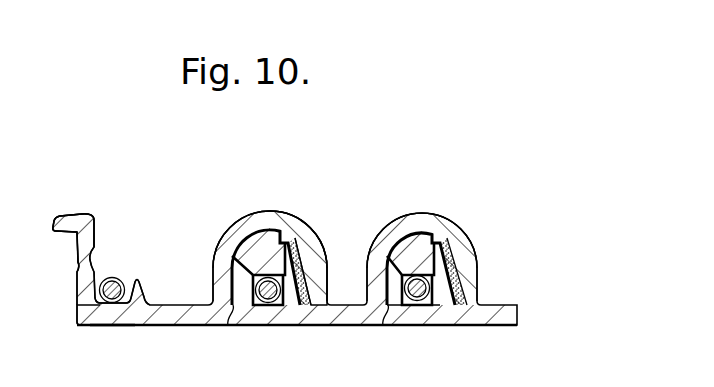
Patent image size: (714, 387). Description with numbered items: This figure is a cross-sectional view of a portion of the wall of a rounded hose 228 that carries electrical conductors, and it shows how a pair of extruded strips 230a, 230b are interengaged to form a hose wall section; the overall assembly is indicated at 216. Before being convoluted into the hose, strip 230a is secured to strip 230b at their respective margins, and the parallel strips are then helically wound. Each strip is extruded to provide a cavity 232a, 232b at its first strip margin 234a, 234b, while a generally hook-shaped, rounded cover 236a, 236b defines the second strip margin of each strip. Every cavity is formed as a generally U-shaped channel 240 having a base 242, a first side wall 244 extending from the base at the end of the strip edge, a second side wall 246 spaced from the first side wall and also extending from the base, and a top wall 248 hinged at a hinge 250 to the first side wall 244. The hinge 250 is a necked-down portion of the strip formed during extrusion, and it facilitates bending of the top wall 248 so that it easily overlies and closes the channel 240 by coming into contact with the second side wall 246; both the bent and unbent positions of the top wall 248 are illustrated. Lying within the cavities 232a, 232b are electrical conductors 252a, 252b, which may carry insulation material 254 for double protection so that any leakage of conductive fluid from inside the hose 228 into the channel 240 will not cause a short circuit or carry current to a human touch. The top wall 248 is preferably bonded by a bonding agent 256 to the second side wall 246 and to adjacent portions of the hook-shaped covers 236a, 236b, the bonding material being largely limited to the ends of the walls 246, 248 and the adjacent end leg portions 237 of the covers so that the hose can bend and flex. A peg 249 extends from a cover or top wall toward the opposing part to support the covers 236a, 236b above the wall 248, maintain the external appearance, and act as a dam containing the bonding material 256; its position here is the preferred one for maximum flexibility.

The gasket assembly 216 is at (378, 163).
The hose 228 is at (148, 212).
The peg 249 is at (60, 218).
The top wall 248 is at (92, 219).
The hinge 250 is at (80, 267).
The first side wall 244 is at (78, 290).
The U-shaped channel 240 is at (113, 271).
The insulation material 254 is at (123, 281).
The second side wall 246 is at (147, 295).
The electrical conductor 252a is at (123, 303).
The electrical conductor 252b is at (238, 263).
The cavity 232a is at (90, 327).
The cavity 232b is at (257, 308).
The first strip margin 234a is at (80, 325).
The first strip margin 234b is at (232, 327).
The base 242 is at (108, 327).
The strip 230a is at (232, 213).
The strip 230b is at (378, 217).
The hook-shaped cover 236a is at (258, 212).
The hook-shaped cover 236b is at (423, 217).
The bonding agent 256 is at (300, 258).
The end leg portion 237 is at (320, 270).